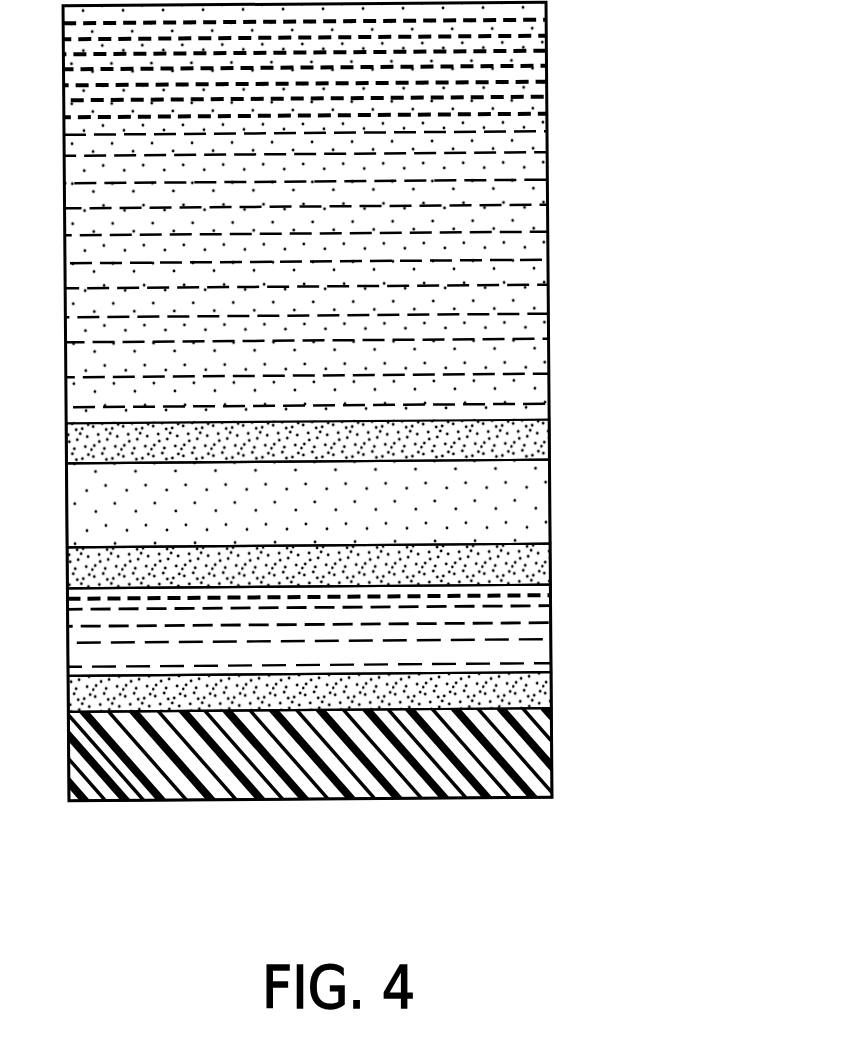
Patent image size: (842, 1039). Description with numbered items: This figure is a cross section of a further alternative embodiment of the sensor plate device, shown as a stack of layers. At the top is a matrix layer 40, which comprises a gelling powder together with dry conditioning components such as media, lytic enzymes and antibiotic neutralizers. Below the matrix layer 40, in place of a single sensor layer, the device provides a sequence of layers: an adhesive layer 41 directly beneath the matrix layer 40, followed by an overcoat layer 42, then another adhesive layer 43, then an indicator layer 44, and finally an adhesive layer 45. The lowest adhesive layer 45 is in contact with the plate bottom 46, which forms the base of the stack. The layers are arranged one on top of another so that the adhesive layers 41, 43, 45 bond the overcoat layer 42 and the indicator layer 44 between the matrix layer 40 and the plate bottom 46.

The matrix layer 40 is at (546, 130).
The adhesive layer 41 is at (549, 447).
The overcoat layer 42 is at (550, 503).
The adhesive layer 43 is at (550, 571).
The indicator layer 44 is at (550, 636).
The adhesive layer 45 is at (551, 695).
The plate bottom 46 is at (552, 758).